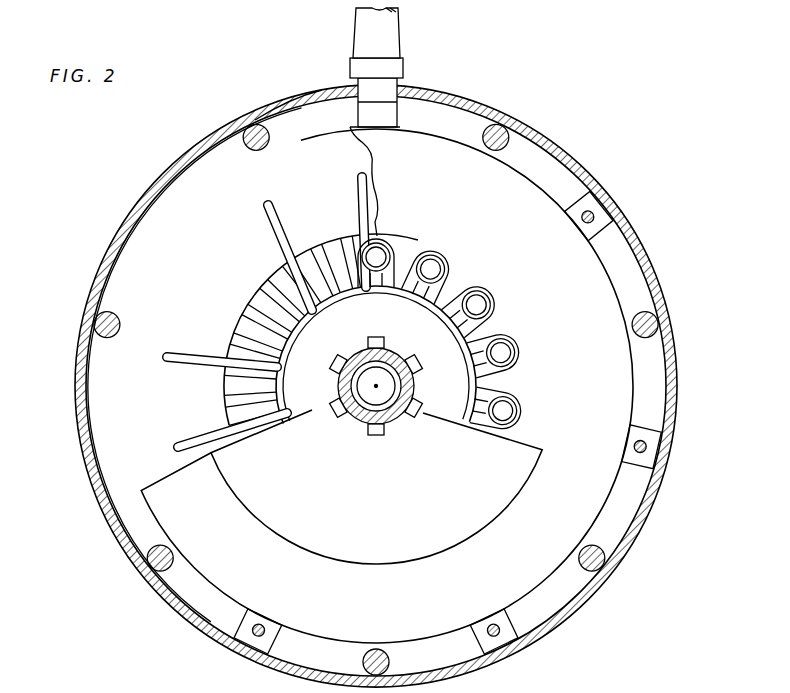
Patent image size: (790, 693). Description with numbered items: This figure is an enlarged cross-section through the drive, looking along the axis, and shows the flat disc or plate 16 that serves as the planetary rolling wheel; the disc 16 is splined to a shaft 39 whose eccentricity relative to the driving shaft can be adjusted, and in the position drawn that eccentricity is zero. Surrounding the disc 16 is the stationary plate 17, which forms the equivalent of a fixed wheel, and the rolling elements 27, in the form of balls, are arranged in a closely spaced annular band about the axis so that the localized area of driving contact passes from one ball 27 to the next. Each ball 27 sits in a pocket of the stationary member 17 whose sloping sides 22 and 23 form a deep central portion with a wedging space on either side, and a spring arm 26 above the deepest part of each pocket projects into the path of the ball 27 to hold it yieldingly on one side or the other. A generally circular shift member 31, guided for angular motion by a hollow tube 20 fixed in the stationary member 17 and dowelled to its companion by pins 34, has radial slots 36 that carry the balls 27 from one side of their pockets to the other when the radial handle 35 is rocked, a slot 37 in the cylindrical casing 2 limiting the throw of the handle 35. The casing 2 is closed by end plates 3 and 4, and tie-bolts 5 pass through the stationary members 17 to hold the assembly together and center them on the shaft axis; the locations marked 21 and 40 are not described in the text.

The cylindrical casing 2 is at (560, 144).
The end plate 3 is at (340, 185).
The end plate 4 is at (396, 263).
The tie-bolts 5 is at (552, 136).
The disc or plate 16 is at (388, 498).
The stationary plate 17 is at (117, 421).
The hollow tube 20 is at (421, 307).
The retaining plate 21 is at (266, 640).
The sloping side 22 is at (311, 249).
The sloping side 23 is at (295, 268).
The spring arm 26 is at (356, 203).
The rolling elements (balls) 27 is at (433, 258).
The shift member 31 is at (608, 389).
The pins 34 is at (647, 445).
The radial handle 35 is at (401, 38).
The radial slots 36 is at (455, 265).
The slot 37 is at (326, 92).
The shaft 39 is at (357, 348).
The shaft center 40 is at (380, 386).